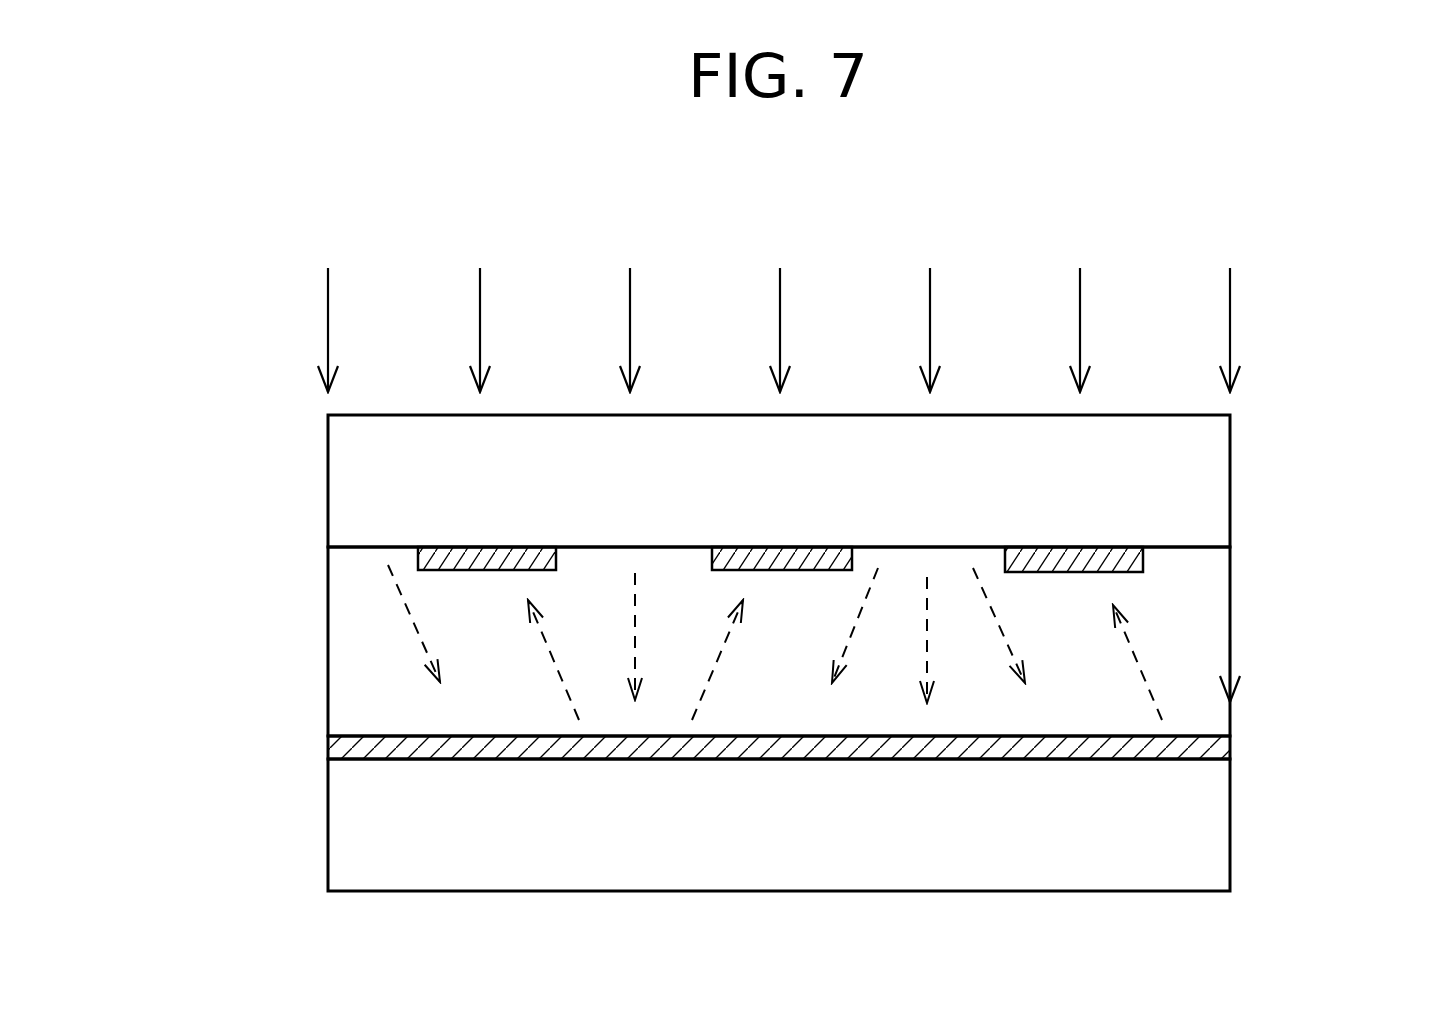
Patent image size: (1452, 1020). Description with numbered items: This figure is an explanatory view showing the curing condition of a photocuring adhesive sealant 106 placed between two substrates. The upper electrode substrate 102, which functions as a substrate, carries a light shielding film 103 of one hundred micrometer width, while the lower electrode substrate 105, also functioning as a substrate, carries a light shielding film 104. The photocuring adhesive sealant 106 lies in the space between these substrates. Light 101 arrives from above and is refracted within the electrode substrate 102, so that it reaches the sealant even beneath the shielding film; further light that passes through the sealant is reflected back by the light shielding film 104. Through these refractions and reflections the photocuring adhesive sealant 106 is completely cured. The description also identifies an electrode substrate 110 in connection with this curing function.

The light 101 is at (782, 305).
The electrode substrate 102 is at (1193, 479).
The light shielding film 103 is at (1118, 560).
The light shielding film 104 is at (1197, 750).
The electrode substrate 105 is at (1200, 820).
The photocuring adhesive sealant 106 is at (1208, 722).
The electrode substrate 110 is at (413, 622).